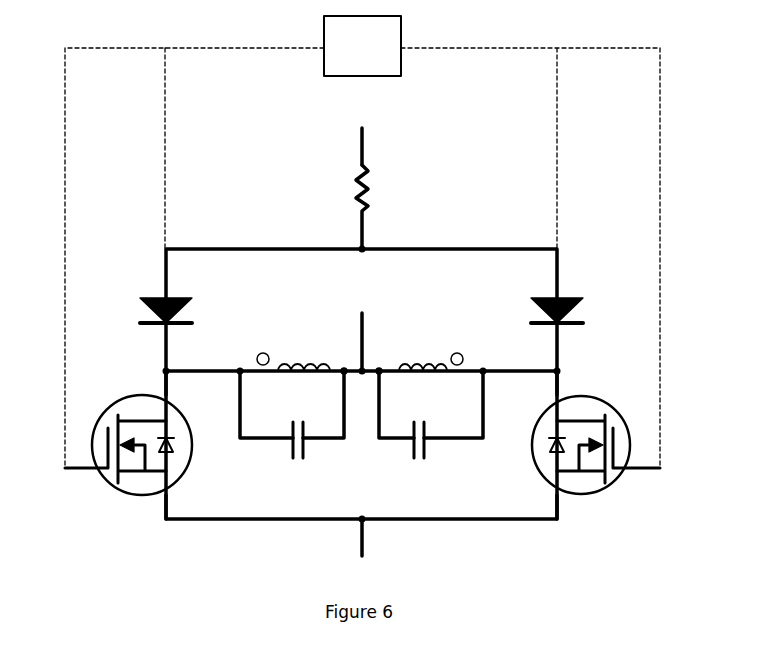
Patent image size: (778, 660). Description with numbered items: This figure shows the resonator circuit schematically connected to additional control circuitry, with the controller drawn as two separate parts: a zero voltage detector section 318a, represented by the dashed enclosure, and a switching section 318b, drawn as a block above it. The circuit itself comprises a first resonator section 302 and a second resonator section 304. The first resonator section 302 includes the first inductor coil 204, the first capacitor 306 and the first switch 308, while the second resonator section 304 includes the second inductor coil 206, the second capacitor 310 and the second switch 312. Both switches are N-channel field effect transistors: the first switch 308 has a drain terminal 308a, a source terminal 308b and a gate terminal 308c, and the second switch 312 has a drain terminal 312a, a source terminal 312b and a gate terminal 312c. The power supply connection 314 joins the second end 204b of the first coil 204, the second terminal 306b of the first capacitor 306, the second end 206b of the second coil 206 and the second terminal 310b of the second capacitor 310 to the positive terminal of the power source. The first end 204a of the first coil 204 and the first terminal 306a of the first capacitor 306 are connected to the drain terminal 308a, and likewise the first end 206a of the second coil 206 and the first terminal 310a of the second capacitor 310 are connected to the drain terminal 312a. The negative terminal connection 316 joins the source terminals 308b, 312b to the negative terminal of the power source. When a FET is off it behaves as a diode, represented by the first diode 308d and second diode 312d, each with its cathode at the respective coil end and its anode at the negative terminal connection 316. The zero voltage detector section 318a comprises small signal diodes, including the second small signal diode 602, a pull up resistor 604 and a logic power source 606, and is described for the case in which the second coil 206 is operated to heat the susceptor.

The zero voltage detector section 318a is at (462, 194).
The switching section 318b is at (410, 27).
The logic power source 606 is at (365, 140).
The pull up resistor 604 is at (367, 185).
The second small signal diode 602 is at (573, 297).
The power supply connection 314 is at (362, 313).
The negative terminal connection 316 is at (365, 540).
The first resonator section 302 is at (250, 538).
The second resonator section 304 is at (512, 536).
The first inductor coil 204 is at (302, 379).
The first end of the first inductor coil 204a is at (265, 352).
The second end of the first inductor coil 204b is at (328, 370).
The second inductor coil 206 is at (425, 379).
The first end of the second inductor coil 206a is at (446, 368).
The second end of the second inductor coil 206b is at (392, 370).
The first capacitor 306 is at (286, 468).
The first terminal of the first capacitor 306a is at (282, 450).
The second terminal of the first capacitor 306b is at (310, 450).
The second capacitor 310 is at (439, 468).
The first terminal of the second capacitor 310a is at (432, 450).
The second terminal of the second capacitor 310b is at (408, 450).
The first switch 308 is at (116, 450).
The drain terminal of the first FET 308a is at (162, 385).
The source terminal of the first FET 308b is at (150, 494).
The gate terminal of the first FET 308c is at (86, 462).
The first diode 308d is at (172, 440).
The second switch 312 is at (607, 460).
The drain terminal of the second FET 312a is at (565, 402).
The source terminal of the second FET 312b is at (566, 496).
The gate terminal of the second FET 312c is at (640, 468).
The second diode 312d is at (548, 442).